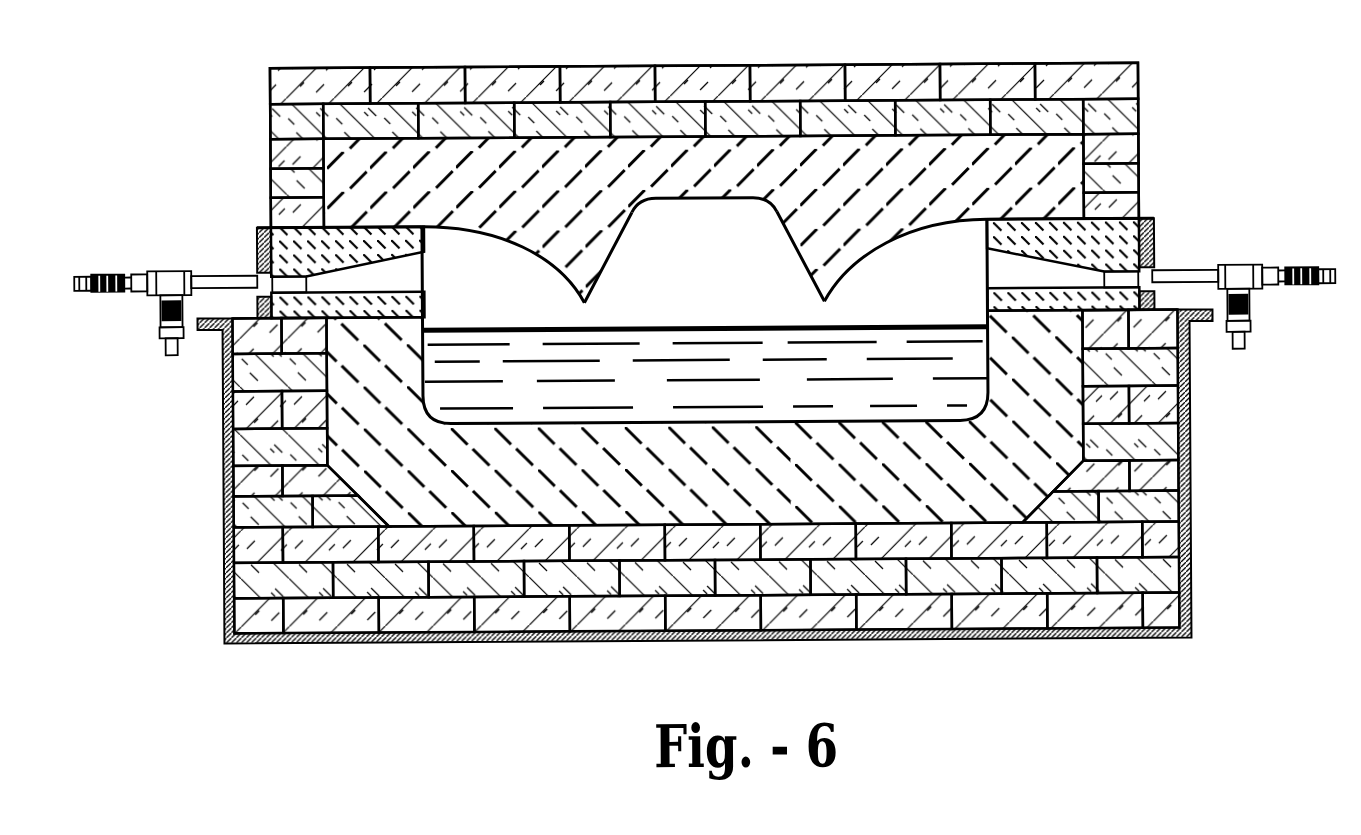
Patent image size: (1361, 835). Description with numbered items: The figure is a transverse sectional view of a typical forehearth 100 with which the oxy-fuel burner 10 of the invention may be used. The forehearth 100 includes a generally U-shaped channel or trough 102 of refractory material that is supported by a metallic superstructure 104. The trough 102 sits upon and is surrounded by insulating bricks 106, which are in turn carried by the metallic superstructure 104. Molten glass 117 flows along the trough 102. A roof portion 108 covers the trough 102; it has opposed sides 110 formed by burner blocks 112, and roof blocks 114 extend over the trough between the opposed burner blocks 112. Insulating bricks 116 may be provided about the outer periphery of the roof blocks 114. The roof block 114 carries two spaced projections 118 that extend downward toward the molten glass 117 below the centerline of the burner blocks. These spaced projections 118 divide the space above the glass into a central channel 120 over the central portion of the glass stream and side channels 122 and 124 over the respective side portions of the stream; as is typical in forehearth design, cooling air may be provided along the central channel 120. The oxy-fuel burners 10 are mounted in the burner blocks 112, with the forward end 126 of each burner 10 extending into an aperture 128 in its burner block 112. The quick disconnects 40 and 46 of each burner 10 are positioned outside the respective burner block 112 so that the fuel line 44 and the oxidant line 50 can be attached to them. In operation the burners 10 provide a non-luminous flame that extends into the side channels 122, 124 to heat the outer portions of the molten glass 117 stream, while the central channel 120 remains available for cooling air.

The forehearth 100 is at (253, 86).
The channel or trough 102 is at (387, 430).
The metallic superstructure 104 is at (403, 641).
The insulating bricks 106 is at (934, 641).
The roof portion 108 is at (1033, 130).
The opposed sides 110 is at (257, 221).
The burner blocks 112 is at (272, 162).
The roof blocks 114 is at (682, 180).
The insulating bricks 116 is at (1142, 100).
The molten glass 117 is at (662, 372).
The spaced projections 118 is at (588, 278).
The central channel 120 is at (697, 243).
The side channel 122 is at (457, 245).
The side channel 124 is at (933, 260).
The forward end 126 is at (387, 274).
The aperture 128 is at (315, 190).
The oxy-fuel burner 10 is at (158, 292).
The quick disconnect 40 is at (98, 270).
The fuel line 44 is at (72, 273).
The quick disconnect 46 is at (163, 332).
The oxidant line 50 is at (168, 353).